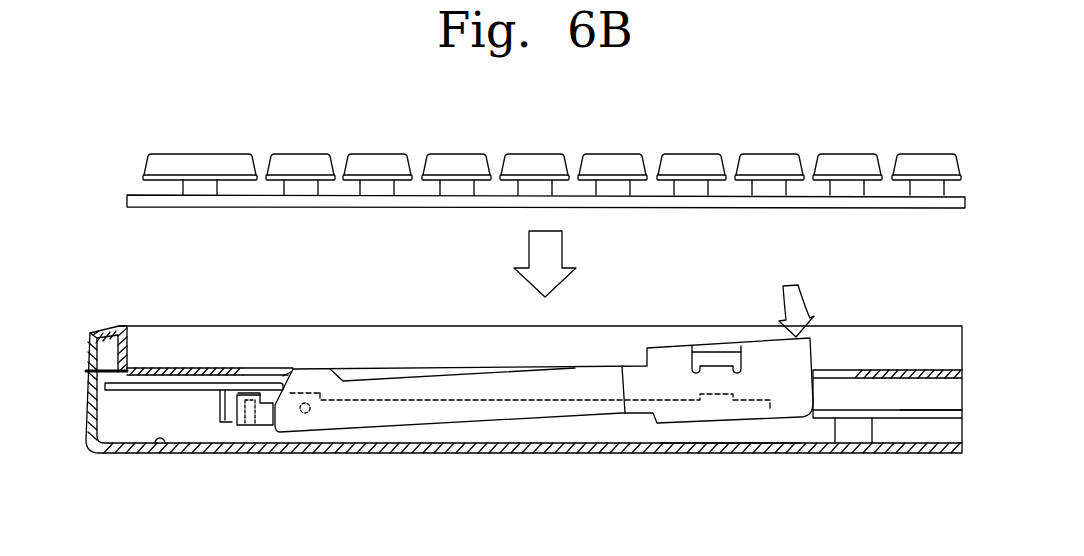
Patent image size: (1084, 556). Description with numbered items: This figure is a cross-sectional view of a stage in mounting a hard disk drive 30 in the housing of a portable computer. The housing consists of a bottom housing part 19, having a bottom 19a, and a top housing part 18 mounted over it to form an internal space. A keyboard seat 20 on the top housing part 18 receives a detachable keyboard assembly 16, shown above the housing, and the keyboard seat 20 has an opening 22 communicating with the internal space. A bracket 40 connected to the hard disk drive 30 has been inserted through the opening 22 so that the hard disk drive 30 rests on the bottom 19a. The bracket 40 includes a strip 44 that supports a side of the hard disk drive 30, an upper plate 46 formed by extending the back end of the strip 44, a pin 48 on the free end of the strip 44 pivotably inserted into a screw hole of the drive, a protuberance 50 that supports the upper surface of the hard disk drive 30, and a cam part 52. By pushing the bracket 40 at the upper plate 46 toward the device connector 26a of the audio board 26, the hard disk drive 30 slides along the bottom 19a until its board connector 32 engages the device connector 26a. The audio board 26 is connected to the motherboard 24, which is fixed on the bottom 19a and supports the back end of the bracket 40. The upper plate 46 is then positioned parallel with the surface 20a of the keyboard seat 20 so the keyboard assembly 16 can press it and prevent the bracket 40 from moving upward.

The keyboard assembly 16 is at (792, 147).
The top housing part 18 is at (113, 327).
The bottom housing part 19 is at (118, 453).
The bottom 19a is at (158, 446).
The keyboard seat 20 is at (160, 346).
The surface of the keyboard seat 20a is at (207, 367).
The opening 22 is at (259, 372).
The motherboard 24 is at (922, 418).
The audio board 26 is at (178, 390).
The device connector 26a is at (217, 424).
The hard disk drive 30 is at (713, 430).
The board connector 32 is at (274, 427).
The bracket 40 is at (818, 344).
The strip 44 is at (587, 380).
The upper plate 46 is at (672, 347).
The pin 48 is at (310, 413).
The protuberance 50 is at (715, 352).
The cam part 52 is at (285, 377).